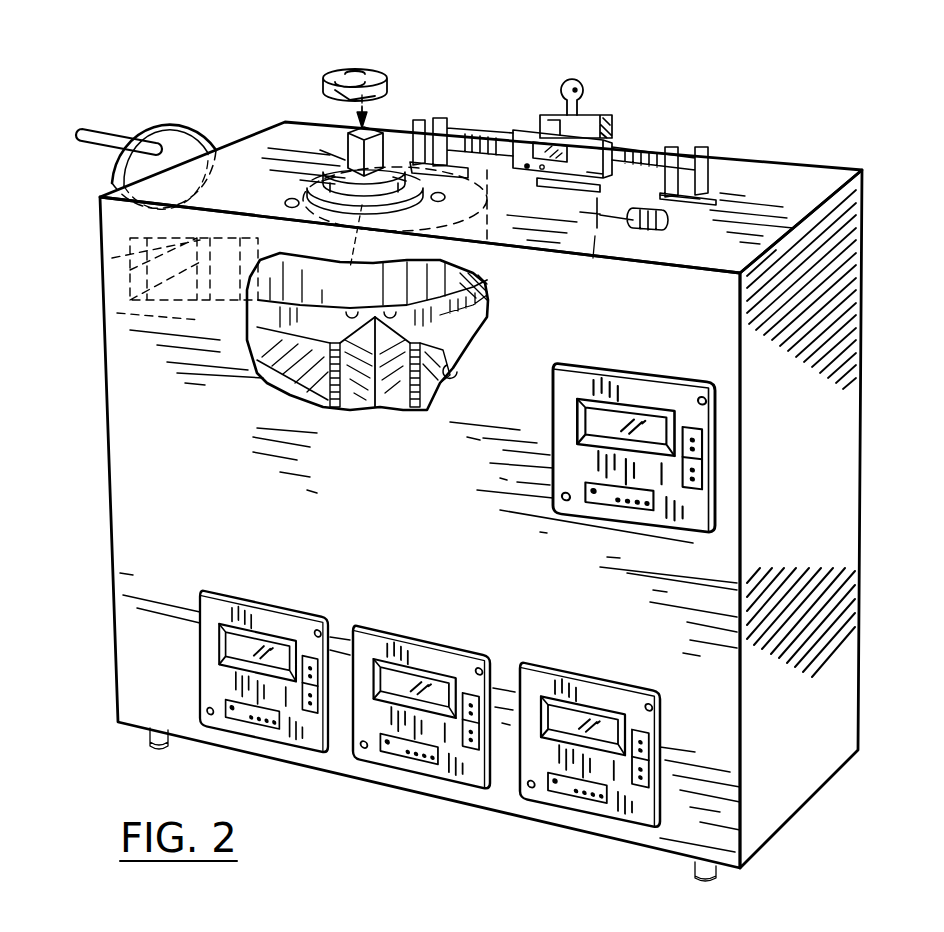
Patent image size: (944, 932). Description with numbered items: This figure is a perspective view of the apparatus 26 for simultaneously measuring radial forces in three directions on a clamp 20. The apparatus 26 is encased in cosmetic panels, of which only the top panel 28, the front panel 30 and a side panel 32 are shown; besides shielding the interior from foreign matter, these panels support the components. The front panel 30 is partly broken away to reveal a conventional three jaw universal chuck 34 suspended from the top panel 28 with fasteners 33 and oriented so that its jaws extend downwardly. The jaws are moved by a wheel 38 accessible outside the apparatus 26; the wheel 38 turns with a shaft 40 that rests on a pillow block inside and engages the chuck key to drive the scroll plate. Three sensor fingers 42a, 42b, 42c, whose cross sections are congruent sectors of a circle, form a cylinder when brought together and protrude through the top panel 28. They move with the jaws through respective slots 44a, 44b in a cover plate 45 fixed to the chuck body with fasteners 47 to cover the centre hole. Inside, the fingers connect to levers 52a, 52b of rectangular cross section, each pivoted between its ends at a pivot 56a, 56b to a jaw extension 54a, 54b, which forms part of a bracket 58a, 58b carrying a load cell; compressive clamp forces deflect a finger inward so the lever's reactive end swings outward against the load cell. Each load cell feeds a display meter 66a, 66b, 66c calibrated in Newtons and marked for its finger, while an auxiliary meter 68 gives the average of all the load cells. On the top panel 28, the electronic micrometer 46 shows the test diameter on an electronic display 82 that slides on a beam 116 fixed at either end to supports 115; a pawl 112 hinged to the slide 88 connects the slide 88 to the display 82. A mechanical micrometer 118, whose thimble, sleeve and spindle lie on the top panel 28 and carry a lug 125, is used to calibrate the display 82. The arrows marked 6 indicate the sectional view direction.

The clamp 20 is at (334, 66).
The apparatus 26 is at (195, 66).
The top panel 28 is at (792, 178).
The front panel 30 is at (675, 314).
The side panel 32 is at (752, 354).
The fasteners 33 is at (294, 208).
The three jaw universal chuck 34 is at (413, 282).
The wheel 38 is at (162, 136).
The shaft 40 is at (232, 148).
The sensor finger 42a is at (378, 132).
The sensor finger 42b is at (352, 130).
The sensor finger 42c is at (372, 130).
The slot 44a is at (440, 132).
The slot 44b is at (345, 146).
The cover plate 45 is at (345, 196).
The electronic micrometer 46 is at (630, 70).
The fasteners 47 is at (328, 205).
The lever 52a is at (397, 403).
The lever 52b is at (353, 395).
The jaw extension 54a is at (447, 340).
The jaw extension 54b is at (255, 358).
The pivot 56a is at (447, 330).
The pivot 56b is at (326, 362).
The bracket 58a is at (442, 368).
The bracket 58b is at (300, 388).
The display meter 66a is at (592, 685).
The display meter 66b is at (415, 648).
The display meter 66c is at (255, 610).
The auxiliary meter 68 is at (636, 383).
The electronic display 82 is at (553, 180).
The slide 88 is at (597, 115).
The pawl 112 is at (567, 84).
The supports 115 is at (494, 134).
The beam 116 is at (670, 148).
The mechanical micrometer 118 is at (652, 228).
The lug 125 is at (596, 265).
The section line 6- 6 is at (96, 250).